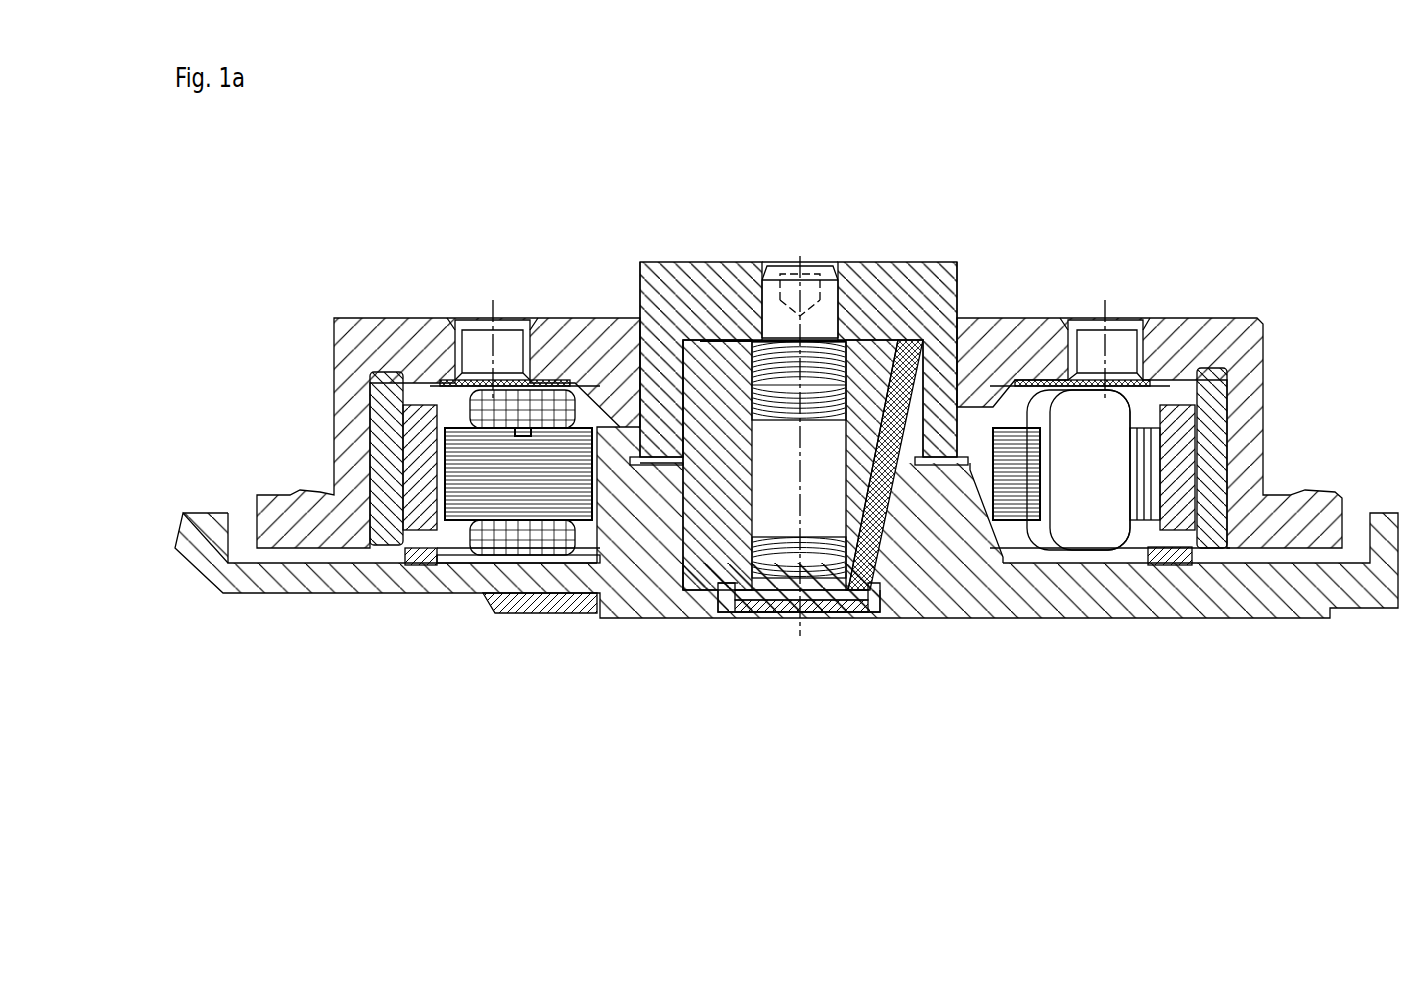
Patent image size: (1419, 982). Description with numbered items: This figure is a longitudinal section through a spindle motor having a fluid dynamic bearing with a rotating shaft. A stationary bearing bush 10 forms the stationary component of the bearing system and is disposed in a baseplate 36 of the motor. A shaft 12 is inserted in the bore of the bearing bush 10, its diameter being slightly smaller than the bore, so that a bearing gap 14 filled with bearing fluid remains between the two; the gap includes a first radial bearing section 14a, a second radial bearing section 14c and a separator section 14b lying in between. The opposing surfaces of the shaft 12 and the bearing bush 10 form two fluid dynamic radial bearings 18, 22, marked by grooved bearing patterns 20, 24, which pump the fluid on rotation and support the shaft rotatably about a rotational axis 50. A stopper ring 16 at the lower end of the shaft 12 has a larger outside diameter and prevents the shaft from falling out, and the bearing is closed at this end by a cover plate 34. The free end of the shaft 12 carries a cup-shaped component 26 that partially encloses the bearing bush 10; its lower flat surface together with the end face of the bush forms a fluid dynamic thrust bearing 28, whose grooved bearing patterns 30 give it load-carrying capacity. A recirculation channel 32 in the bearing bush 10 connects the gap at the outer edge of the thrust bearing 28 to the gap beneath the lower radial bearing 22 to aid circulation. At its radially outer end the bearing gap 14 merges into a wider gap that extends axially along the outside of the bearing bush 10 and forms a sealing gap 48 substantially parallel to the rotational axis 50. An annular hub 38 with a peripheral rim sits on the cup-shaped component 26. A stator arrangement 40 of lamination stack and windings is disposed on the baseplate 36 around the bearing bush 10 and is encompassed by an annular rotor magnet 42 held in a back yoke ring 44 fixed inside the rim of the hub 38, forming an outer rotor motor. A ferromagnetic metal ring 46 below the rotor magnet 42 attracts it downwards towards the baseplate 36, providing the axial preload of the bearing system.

The bearing bush 10 is at (900, 510).
The shaft 12 is at (830, 290).
The bearing gap 14 is at (938, 282).
The first radial bearing section 14a is at (747, 372).
The separator section 14b is at (700, 568).
The second radial bearing section 14c is at (735, 577).
The stopper ring 16 is at (790, 595).
The radial bearing 18 is at (850, 388).
The grooved bearing pattern 20 is at (865, 380).
The radial bearing 22 is at (808, 565).
The grooved bearing pattern 24 is at (872, 565).
The cup-shaped component 26 is at (958, 319).
The fluid dynamic thrust bearing 28 is at (680, 300).
The grooved bearing patterns 30 is at (735, 330).
The recirculation channel 32 is at (962, 340).
The cover plate 34 is at (778, 605).
The baseplate 36 is at (1240, 603).
The annular hub 38 is at (1185, 343).
The stator arrangement 40 is at (475, 493).
The rotor magnet 42 is at (420, 513).
The back yoke ring 44 is at (387, 520).
The ferromagnetic metal ring 46 is at (428, 565).
The sealing gap 48 is at (638, 277).
The rotational axis 50 is at (798, 256).